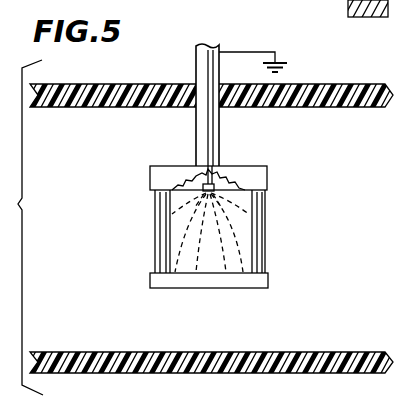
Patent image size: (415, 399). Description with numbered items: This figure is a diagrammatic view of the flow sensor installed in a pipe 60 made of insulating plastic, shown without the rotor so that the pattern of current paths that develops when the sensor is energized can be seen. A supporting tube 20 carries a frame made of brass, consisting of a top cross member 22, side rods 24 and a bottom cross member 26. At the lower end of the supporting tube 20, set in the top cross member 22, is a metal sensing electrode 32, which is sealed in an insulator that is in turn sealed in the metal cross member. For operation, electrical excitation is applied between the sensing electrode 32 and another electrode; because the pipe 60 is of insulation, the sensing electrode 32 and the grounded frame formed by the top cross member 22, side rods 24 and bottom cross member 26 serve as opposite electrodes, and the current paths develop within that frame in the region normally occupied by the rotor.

The supporting tube 20 is at (200, 132).
The top cross member 22 is at (255, 171).
The side rods 24 is at (268, 219).
The bottom cross member 26 is at (170, 285).
The sensing electrode 32 is at (204, 190).
The pipe 60 is at (308, 352).